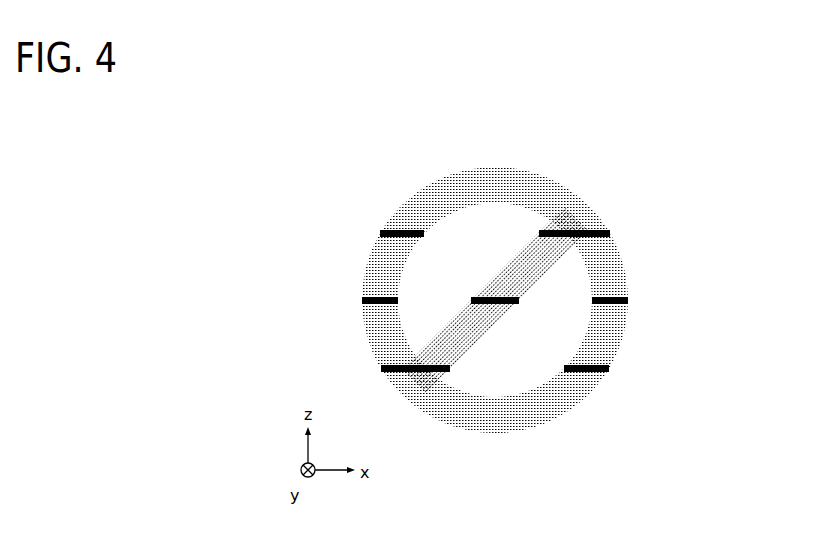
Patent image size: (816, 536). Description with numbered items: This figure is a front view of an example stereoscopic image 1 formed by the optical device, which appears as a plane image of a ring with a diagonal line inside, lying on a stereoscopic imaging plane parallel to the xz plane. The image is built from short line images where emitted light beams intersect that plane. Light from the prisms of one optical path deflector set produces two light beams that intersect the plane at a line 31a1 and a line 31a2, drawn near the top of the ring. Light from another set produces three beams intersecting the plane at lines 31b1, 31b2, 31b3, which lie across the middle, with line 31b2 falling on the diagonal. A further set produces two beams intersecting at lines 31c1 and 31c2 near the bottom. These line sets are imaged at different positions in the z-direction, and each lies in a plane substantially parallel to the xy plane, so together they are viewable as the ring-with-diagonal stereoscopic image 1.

The stereoscopic image 1 is at (563, 181).
The line 31a1 is at (400, 233).
The line 31a2 is at (588, 236).
The line 31b1 is at (377, 300).
The line 31b2 is at (496, 300).
The line 31b3 is at (615, 301).
The line 31c1 is at (389, 368).
The line 31c2 is at (600, 369).